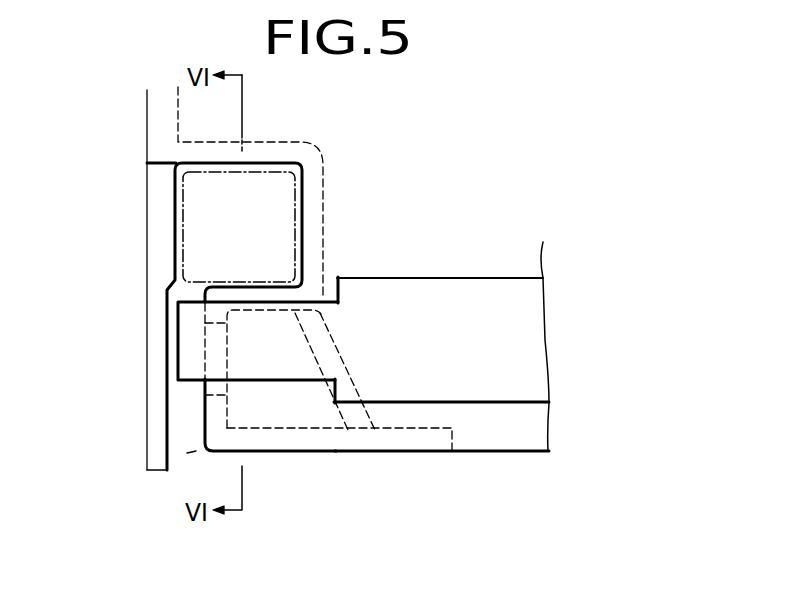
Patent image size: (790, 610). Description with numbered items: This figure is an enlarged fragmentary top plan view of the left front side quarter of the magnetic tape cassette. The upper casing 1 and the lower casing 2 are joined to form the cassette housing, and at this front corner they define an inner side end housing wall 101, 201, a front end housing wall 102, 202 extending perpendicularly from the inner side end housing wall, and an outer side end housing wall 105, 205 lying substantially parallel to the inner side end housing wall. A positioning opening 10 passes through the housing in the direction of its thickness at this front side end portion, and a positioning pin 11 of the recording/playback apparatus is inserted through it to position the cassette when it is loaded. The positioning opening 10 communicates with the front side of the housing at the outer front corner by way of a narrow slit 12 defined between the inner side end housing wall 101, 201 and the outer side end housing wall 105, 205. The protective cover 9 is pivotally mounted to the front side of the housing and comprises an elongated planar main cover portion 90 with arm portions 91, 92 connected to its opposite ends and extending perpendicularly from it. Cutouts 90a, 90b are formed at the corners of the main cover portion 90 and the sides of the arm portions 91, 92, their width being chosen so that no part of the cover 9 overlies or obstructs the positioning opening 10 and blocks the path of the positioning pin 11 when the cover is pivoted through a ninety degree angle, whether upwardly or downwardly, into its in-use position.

The upper casing 1 is at (148, 120).
The lower casing 2 is at (147, 158).
The positioning opening 10 is at (177, 218).
The positioning pin 11 is at (296, 188).
The slit 12 is at (187, 453).
The protective cover 9 is at (477, 416).
The main cover portion 90 is at (460, 288).
The cutout 90a is at (314, 294).
The cutout 90b is at (313, 392).
The arm portion 91 is at (197, 341).
The arm portion 92 is at (178, 323).
The inner side end housing wall 101 is at (182, 415).
The inner side end housing wall 201 is at (205, 415).
The front end housing wall 102 is at (334, 422).
The front end housing wall 202 is at (383, 436).
The outer side end housing wall 205 is at (87, 415).
The outer side end housing wall 105 is at (157, 378).